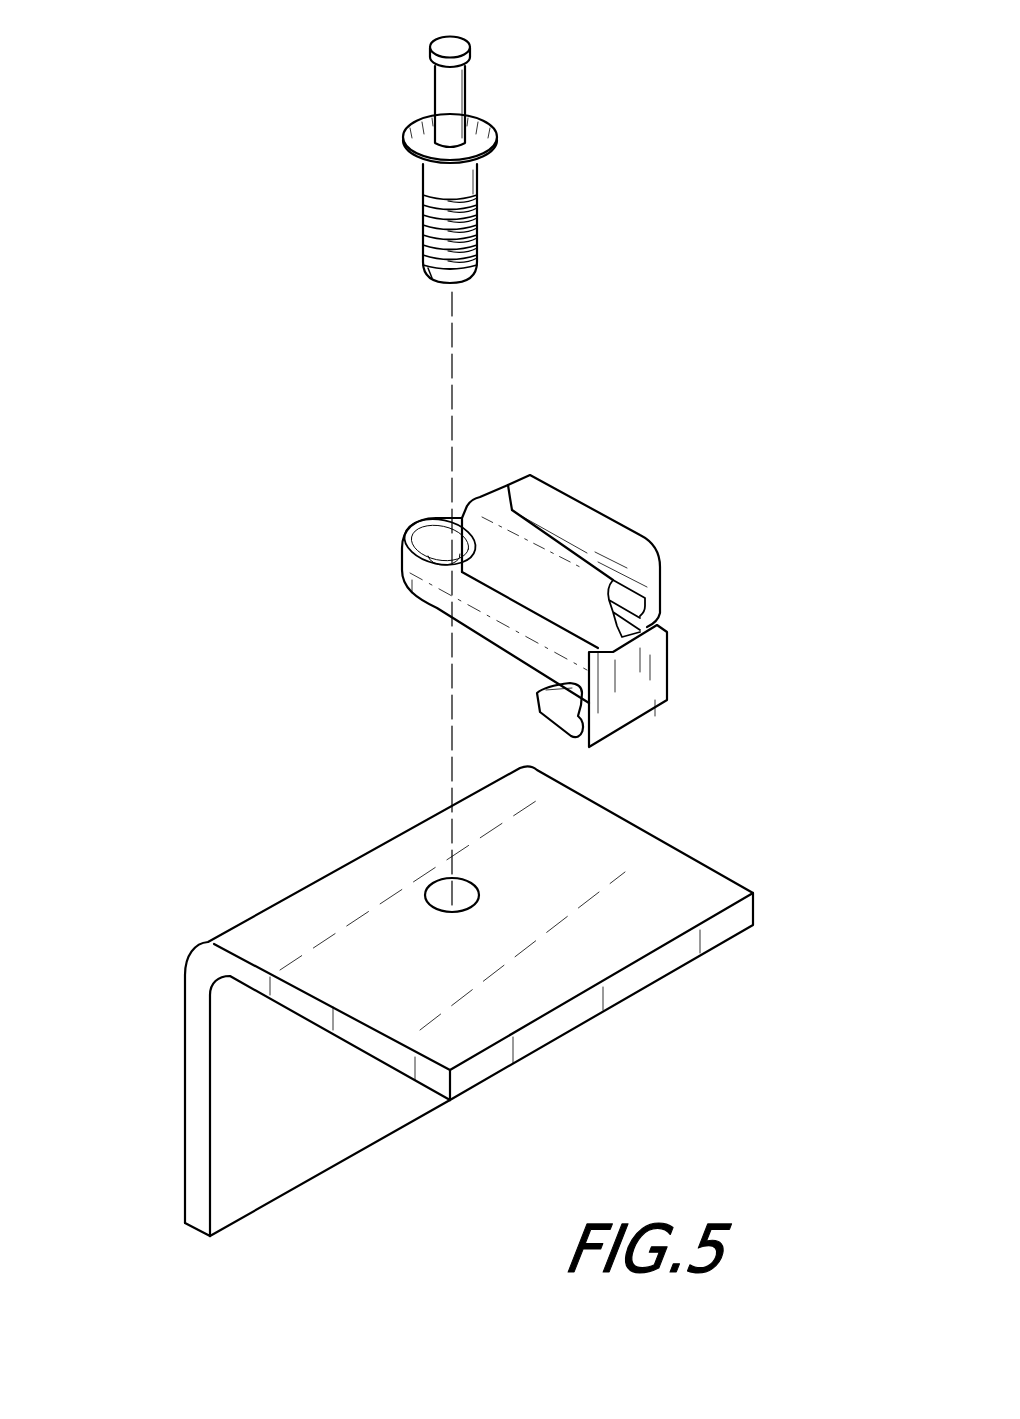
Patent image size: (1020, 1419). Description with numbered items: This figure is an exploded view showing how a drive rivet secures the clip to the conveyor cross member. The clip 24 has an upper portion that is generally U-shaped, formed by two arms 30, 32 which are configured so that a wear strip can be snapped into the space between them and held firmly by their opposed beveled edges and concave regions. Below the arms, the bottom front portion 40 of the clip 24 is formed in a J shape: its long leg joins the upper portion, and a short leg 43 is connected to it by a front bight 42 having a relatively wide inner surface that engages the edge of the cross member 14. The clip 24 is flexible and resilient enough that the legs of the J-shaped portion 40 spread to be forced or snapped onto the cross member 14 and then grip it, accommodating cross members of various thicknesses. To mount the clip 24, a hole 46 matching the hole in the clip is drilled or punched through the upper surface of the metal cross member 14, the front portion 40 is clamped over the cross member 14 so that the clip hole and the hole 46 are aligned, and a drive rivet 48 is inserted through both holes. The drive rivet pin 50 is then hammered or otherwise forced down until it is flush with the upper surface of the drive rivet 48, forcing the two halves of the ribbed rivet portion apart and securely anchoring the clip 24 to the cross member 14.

The cross member 14 is at (424, 1001).
The clip 24 is at (577, 603).
The arm 30 is at (543, 492).
The arm 32 is at (473, 517).
The bottom front portion 40 is at (476, 638).
The front bight 42 is at (628, 683).
The short leg 43 is at (426, 548).
The hole 46 is at (426, 884).
The drive rivet 48 is at (500, 142).
The drive rivet pin 50 is at (452, 50).